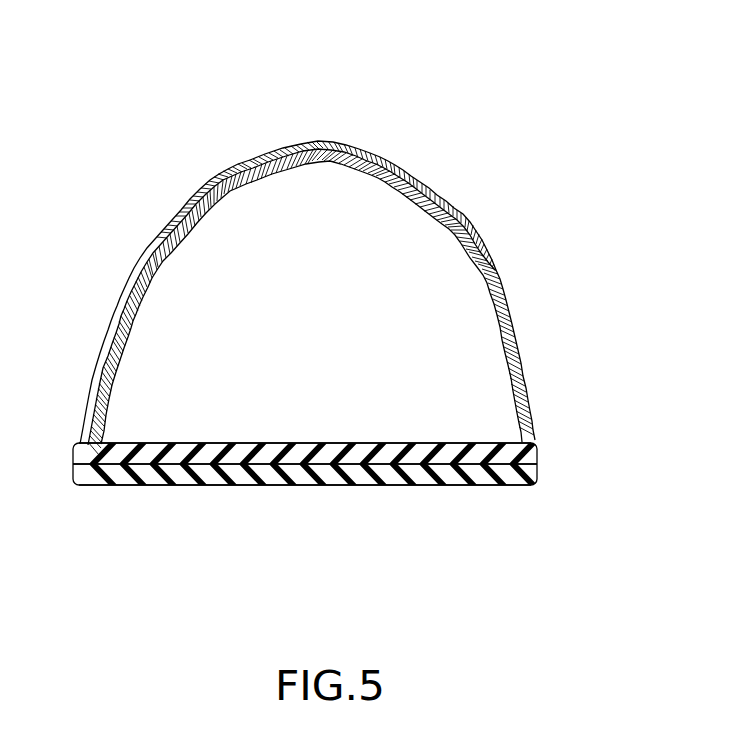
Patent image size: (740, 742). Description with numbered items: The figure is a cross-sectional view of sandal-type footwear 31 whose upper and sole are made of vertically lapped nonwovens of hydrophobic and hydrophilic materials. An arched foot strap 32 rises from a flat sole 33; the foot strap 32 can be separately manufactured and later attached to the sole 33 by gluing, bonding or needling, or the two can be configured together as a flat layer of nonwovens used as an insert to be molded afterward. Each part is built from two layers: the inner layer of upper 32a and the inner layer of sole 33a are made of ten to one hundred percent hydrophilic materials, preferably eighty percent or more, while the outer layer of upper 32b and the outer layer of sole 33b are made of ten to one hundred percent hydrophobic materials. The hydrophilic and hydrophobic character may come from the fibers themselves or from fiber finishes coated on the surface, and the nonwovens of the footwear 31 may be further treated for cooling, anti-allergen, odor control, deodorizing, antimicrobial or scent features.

The footwear 31 is at (148, 126).
The foot strap 32 is at (607, 190).
The inner layer of upper 32a is at (499, 266).
The outer layer of upper 32b is at (480, 218).
The sole 33 is at (567, 513).
The inner layer of sole 33a is at (487, 478).
The outer layer of sole 33b is at (438, 490).